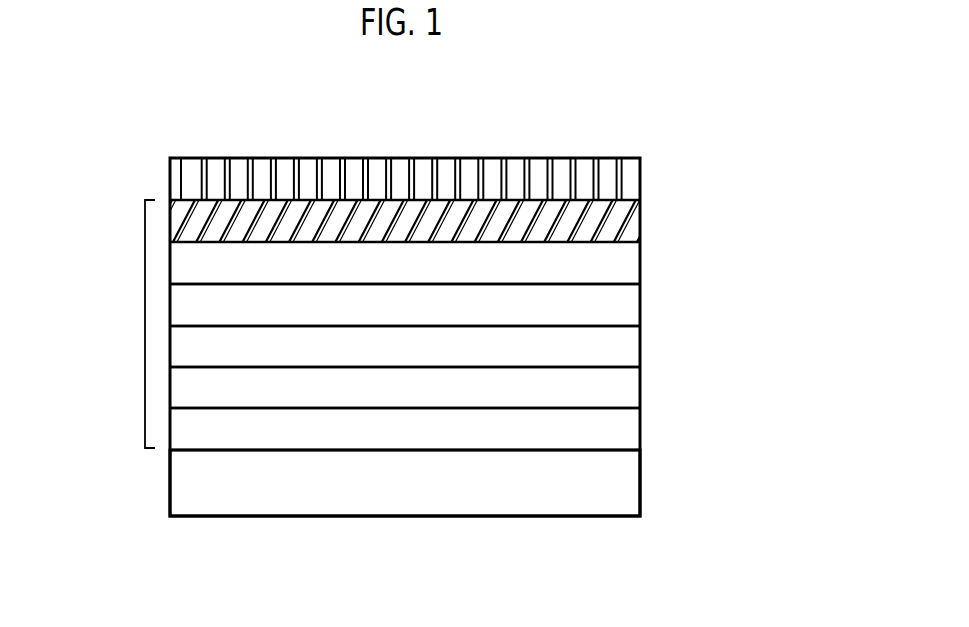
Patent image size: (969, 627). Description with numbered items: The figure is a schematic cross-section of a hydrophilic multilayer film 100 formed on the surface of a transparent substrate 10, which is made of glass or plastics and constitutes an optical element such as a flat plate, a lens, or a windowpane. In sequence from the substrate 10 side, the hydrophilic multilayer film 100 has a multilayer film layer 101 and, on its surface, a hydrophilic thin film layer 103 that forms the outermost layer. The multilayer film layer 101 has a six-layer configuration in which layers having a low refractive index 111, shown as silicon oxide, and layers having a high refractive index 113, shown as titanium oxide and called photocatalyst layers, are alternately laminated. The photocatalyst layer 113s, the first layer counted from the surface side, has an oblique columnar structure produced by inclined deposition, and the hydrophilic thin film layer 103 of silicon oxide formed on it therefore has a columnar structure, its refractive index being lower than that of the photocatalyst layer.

The hydrophilic multilayer film 100 is at (106, 174).
The multilayer film layer 101 is at (145, 325).
The hydrophilic thin film layer 103 is at (490, 168).
The photocatalyst layer 113s is at (640, 226).
The layer having a low refractive index 111 is at (640, 265).
The layer having a high refractive index 113 is at (640, 310).
The substrate 10 is at (580, 507).